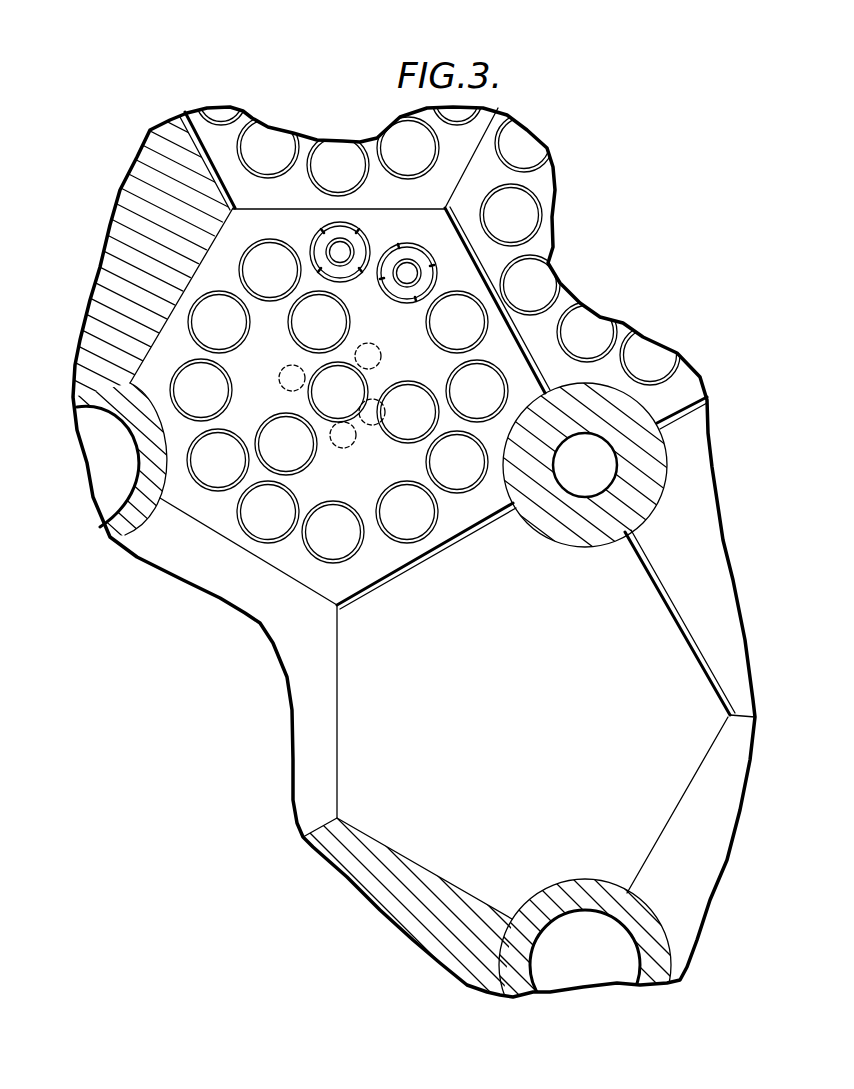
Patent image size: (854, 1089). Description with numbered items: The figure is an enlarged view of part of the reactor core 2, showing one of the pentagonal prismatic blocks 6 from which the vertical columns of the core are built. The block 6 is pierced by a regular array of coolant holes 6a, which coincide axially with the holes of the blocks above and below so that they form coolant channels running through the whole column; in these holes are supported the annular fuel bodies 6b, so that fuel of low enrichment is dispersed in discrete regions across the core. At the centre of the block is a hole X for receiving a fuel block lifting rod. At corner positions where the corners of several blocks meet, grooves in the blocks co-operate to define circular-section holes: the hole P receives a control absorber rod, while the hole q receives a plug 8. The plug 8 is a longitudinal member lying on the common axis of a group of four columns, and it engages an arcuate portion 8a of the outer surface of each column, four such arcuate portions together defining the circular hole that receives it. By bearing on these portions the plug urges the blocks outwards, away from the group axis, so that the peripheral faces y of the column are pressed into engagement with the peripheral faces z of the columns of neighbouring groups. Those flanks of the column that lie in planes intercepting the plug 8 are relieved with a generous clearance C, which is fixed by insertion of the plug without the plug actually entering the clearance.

The core 2 is at (707, 478).
The block 6 is at (398, 337).
The coolant hole 6a is at (275, 430).
The annular fuel body 6b is at (330, 240).
The hole X is at (350, 405).
The clearance C is at (530, 360).
The plug 8 is at (640, 518).
The arcuate portion 8a is at (568, 550).
The hole q is at (645, 408).
The hole P is at (592, 960).
The peripheral face y is at (433, 870).
The peripheral face z is at (443, 882).